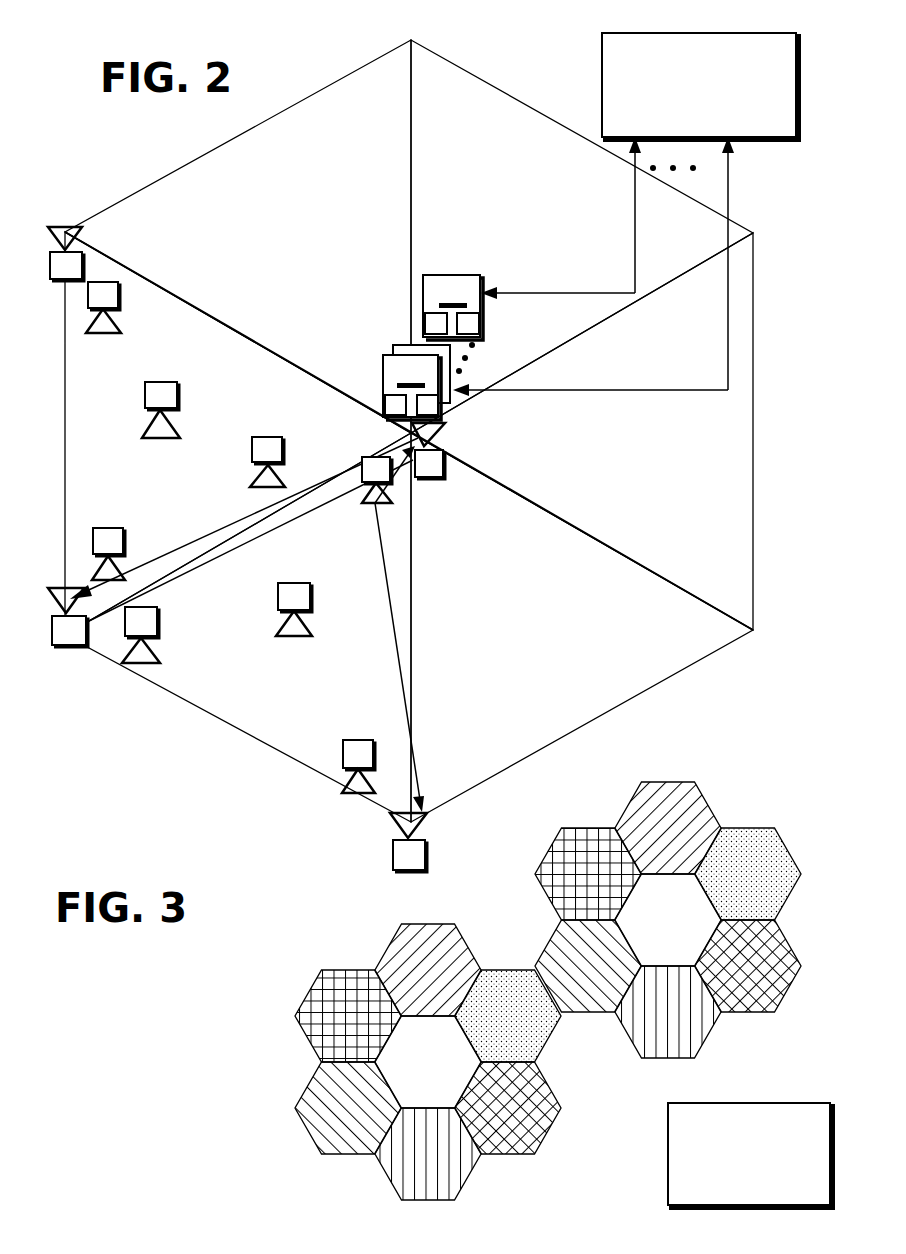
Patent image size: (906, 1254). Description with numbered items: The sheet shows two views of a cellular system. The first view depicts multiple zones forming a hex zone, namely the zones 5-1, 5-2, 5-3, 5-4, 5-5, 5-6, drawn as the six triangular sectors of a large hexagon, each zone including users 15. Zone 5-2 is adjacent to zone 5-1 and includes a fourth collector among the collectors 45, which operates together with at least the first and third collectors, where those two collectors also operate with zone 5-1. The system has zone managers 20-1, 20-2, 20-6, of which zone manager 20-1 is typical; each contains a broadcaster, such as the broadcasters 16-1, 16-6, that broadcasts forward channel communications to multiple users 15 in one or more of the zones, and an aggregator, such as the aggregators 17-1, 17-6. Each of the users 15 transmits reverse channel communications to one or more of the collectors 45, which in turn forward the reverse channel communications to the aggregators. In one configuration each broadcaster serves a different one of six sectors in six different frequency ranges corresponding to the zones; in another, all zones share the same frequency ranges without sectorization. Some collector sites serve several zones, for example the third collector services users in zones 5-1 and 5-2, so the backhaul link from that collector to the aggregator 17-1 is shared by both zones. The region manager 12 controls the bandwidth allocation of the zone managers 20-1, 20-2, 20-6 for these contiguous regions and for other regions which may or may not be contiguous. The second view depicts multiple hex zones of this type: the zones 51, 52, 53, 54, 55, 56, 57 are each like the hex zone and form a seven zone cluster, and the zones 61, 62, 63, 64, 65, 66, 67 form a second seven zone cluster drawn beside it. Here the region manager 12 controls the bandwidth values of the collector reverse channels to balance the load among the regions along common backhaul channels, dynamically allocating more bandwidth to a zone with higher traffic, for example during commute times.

In FIG. 2, the zone 5-1 is at (245, 730).
In FIG. 2, the zone 5-2 is at (75, 505).
In FIG. 2, the zone 5-3 is at (147, 203).
In FIG. 2, the zone 5-4 is at (453, 43).
In FIG. 2, the zone 5-5 is at (750, 441).
In FIG. 2, the zone 5-6 is at (618, 697).
In FIG. 2, the region manager 12 is at (602, 62).
In FIG. 3, the region manager 12 is at (668, 1130).
In FIG. 2, the users 15 is at (103, 333).
In FIG. 2, the collectors 45 is at (65, 281).
In FIG. 2, the zone manager 20-1 is at (435, 400).
In FIG. 2, the zone manager 20-2 is at (395, 345).
In FIG. 2, the zone manager 20-6 is at (476, 296).
In FIG. 2, the broadcaster 16-1 is at (385, 405).
In FIG. 2, the broadcaster 16-6 is at (425, 323).
In FIG. 2, the aggregator 17-1 is at (438, 410).
In FIG. 2, the aggregator 17-6 is at (480, 330).
In FIG. 3, the zone 51 is at (320, 1137).
In FIG. 3, the zone 52 is at (297, 1027).
In FIG. 3, the zone 53 is at (385, 938).
In FIG. 3, the zone 54 is at (491, 985).
In FIG. 3, the zone 55 is at (543, 1085).
In FIG. 3, the zone 56 is at (457, 1170).
In FIG. 3, the zone 57 is at (420, 1067).
In FIG. 3, the zone 61 is at (597, 1000).
In FIG. 3, the zone 62 is at (598, 855).
In FIG. 3, the zone 63 is at (658, 790).
In FIG. 3, the zone 64 is at (762, 872).
In FIG. 3, the zone 65 is at (670, 928).
In FIG. 3, the zone 66 is at (705, 1002).
In FIG. 3, the zone 67 is at (765, 1005).